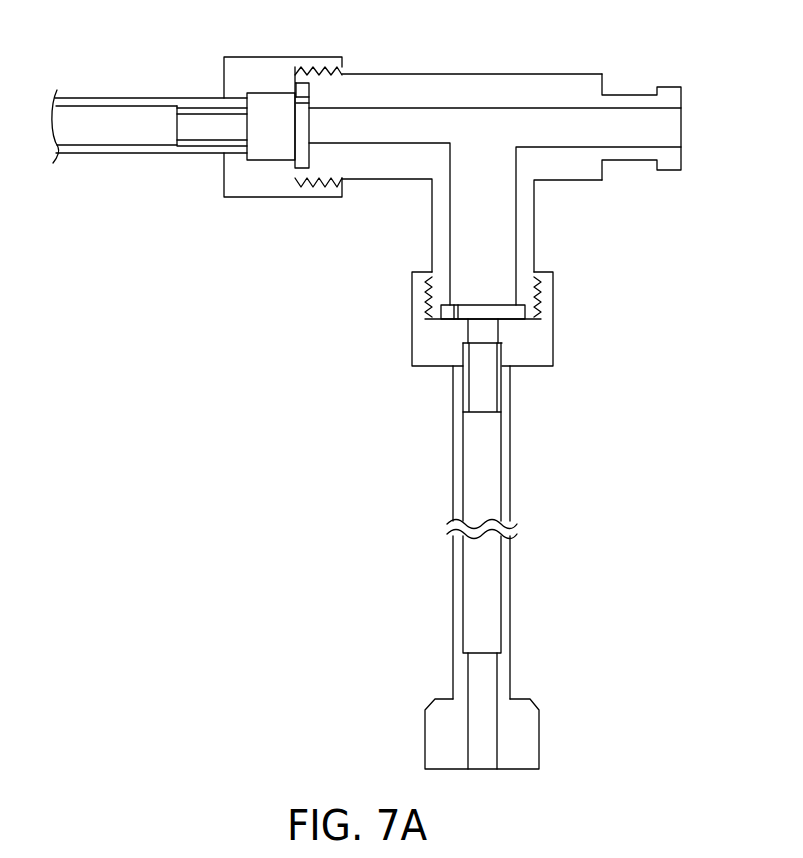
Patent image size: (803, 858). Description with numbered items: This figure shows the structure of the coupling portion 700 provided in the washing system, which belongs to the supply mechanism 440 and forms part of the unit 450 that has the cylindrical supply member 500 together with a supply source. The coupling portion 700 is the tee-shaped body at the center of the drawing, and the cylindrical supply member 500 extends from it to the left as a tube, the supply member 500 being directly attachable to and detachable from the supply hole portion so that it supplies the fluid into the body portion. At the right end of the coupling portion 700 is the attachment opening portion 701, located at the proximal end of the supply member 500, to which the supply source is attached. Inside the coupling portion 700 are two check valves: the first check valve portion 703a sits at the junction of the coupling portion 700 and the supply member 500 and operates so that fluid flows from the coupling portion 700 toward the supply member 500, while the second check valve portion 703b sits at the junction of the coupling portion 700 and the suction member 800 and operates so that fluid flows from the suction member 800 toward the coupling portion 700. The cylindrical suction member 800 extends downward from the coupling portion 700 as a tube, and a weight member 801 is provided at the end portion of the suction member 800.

The supply member 500 is at (124, 86).
The supply mechanism 440 is at (245, 171).
The unit 450 is at (271, 126).
The first check valve portion 703a is at (308, 90).
The coupling portion 700 is at (553, 58).
The attachment opening portion 701 is at (670, 92).
The second check valve portion 703b is at (517, 312).
The suction member 800 is at (548, 622).
The weight member 801 is at (528, 740).